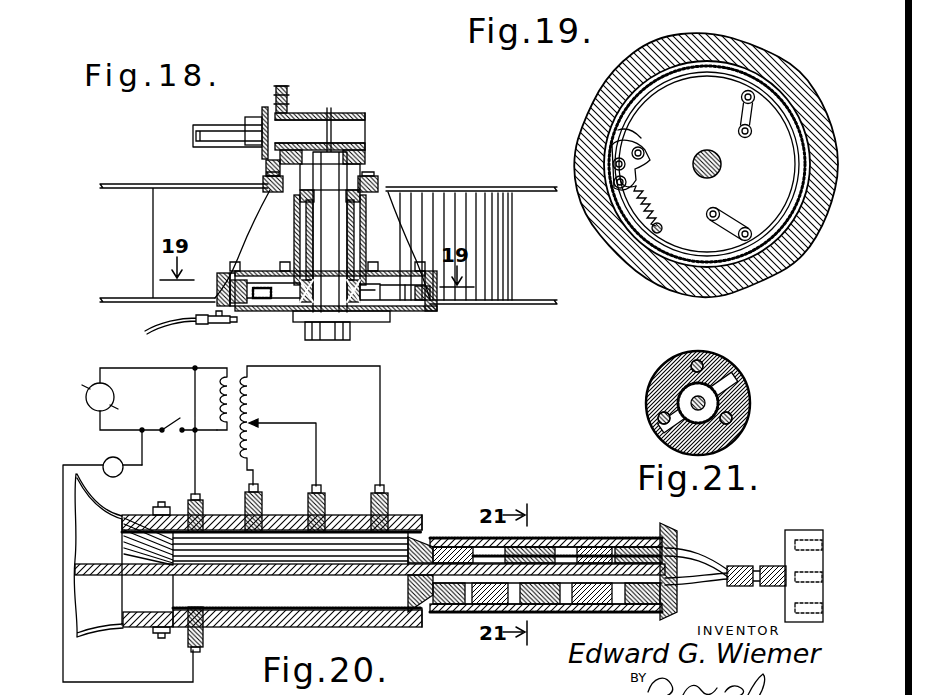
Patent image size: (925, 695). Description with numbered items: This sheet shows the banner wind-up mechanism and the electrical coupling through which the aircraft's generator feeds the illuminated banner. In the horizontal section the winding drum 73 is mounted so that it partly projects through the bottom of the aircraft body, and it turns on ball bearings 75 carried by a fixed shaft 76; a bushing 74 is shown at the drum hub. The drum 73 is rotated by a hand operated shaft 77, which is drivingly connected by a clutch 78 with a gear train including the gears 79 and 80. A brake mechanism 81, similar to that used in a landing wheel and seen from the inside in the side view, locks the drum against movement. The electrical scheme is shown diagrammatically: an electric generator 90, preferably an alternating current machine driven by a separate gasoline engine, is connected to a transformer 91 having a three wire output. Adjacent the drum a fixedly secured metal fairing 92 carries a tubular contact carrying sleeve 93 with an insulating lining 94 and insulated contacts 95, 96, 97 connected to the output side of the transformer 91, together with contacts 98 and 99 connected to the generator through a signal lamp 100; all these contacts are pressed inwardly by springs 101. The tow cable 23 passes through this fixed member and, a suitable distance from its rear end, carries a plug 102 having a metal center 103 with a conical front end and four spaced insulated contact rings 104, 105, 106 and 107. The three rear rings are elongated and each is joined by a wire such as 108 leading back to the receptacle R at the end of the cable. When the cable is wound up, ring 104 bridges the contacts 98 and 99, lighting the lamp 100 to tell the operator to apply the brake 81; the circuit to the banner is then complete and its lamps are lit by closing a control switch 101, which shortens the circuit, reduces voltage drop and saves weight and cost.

In FIG. 20, the tow cable 23 is at (93, 575).
In FIG. 18, the winding drum 73 is at (504, 249).
In FIG. 19, the winding drum 73 is at (641, 283).
In FIG. 18, the sleeve 74 is at (366, 244).
In FIG. 18, the ball bearings 75 is at (357, 215).
In FIG. 18, the fixed shaft 76 is at (318, 232).
In FIG. 18, the hand operated shaft 77 is at (202, 147).
In FIG. 18, the clutch 78 is at (267, 112).
In FIG. 18, the gear 79 is at (289, 90).
In FIG. 18, the gear 80 is at (371, 179).
In FIG. 18, the brake mechanism 81 is at (160, 323).
In FIG. 19, the brake mechanism 81 is at (790, 182).
In FIG. 20, the electric generator 90 is at (111, 388).
In FIG. 20, the transformer 91 is at (249, 398).
In FIG. 20, the metal fairing 92 is at (85, 633).
In FIG. 20, the tubular contact carrying sleeve 93 is at (355, 622).
In FIG. 20, the insulating lining 94 is at (267, 612).
In FIG. 20, the insulated contact 95 is at (253, 537).
In FIG. 20, the insulated contact 96 is at (305, 540).
In FIG. 20, the insulated contact 97 is at (368, 540).
In FIG. 20, the contact 98 is at (166, 572).
In FIG. 20, the contact 99 is at (197, 607).
In FIG. 20, the signal lamp 100 is at (118, 477).
In FIG. 20, the springs / control switch 101 is at (167, 436).
In FIG. 20, the plug 102 is at (532, 538).
In FIG. 20, the metal center 103 is at (428, 613).
In FIG. 20, the insulated contact ring 104 is at (449, 537).
In FIG. 20, the insulated contact ring 105 is at (475, 612).
In FIG. 20, the insulated contact ring 106 is at (562, 538).
In FIG. 20, the insulated contact ring 107 is at (635, 519).
In FIG. 20, the wire 108 is at (698, 555).
In FIG. 20, the receptacle R is at (800, 530).